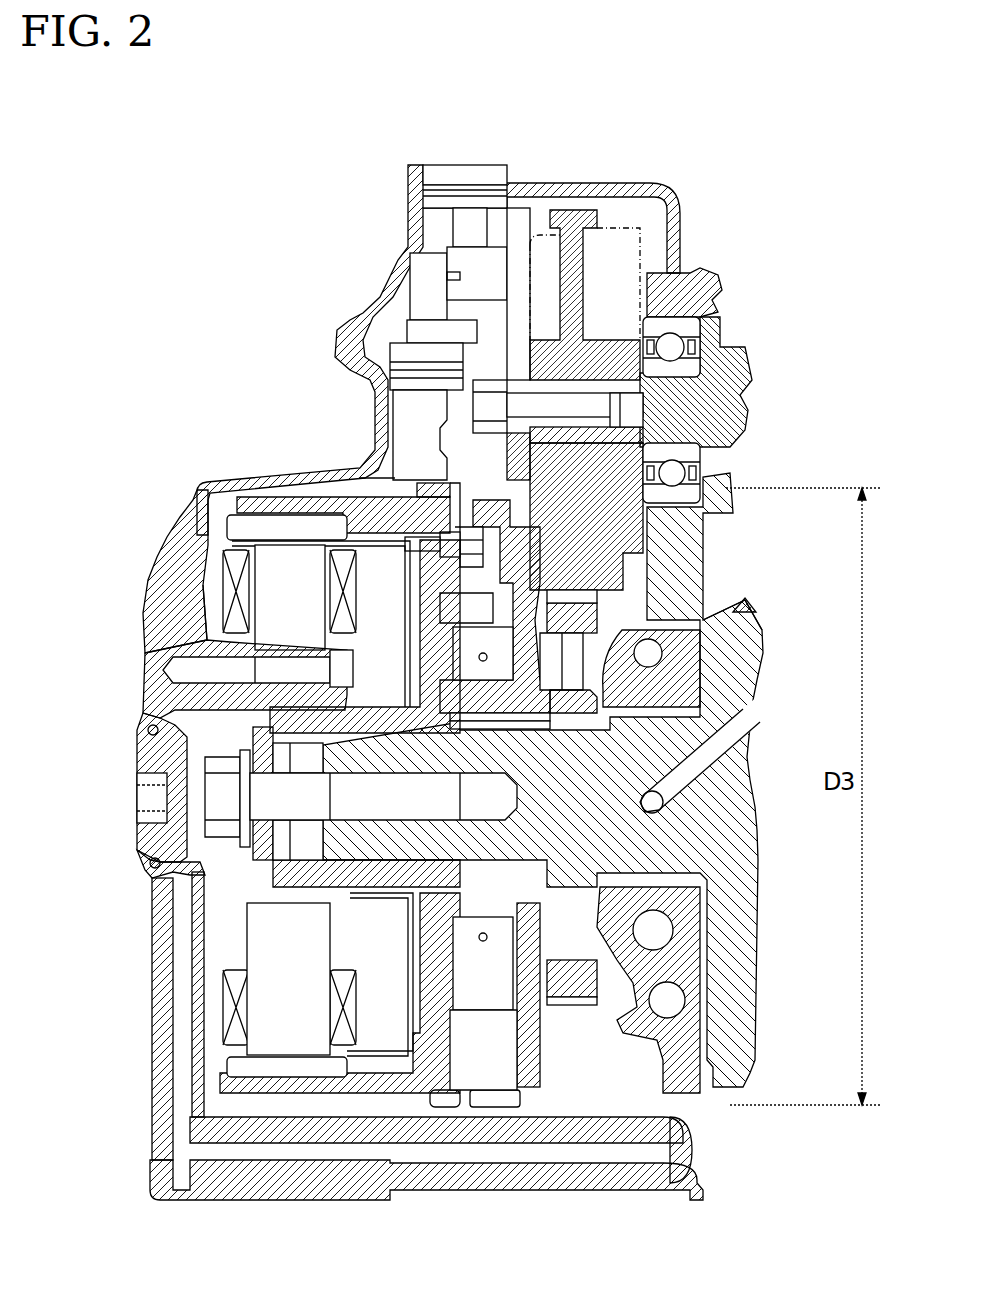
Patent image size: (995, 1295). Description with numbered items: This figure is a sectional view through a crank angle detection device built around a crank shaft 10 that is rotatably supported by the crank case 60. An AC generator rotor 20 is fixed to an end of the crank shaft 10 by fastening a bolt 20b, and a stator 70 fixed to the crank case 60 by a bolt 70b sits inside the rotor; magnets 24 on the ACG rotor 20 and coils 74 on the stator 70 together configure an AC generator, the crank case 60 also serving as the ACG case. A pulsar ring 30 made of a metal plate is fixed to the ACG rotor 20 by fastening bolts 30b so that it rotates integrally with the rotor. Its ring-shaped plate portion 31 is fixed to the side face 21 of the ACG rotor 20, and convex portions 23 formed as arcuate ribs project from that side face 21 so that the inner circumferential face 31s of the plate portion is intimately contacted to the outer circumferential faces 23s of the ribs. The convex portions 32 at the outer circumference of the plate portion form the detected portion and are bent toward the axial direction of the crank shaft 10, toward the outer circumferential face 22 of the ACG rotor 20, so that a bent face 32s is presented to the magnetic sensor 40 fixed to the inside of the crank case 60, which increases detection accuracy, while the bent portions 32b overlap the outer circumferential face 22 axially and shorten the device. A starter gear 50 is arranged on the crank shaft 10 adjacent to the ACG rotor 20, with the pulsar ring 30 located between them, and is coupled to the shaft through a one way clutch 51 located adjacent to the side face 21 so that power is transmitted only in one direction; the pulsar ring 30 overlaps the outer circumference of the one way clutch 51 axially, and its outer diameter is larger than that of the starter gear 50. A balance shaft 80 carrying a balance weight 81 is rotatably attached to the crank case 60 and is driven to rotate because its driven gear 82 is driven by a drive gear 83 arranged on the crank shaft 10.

The crank shaft 10 is at (727, 813).
The AC generator rotor 20 is at (238, 497).
The bolt 20b is at (190, 800).
The side face 21 is at (383, 497).
The outer circumferential face 22 is at (377, 1092).
The convex portions 23 is at (700, 672).
The outer circumferential faces 23s is at (737, 606).
The magnets 24 is at (218, 527).
The pulsar ring 30 is at (480, 1092).
The bolts 30b is at (590, 590).
The ring-shaped plate portion 31 is at (620, 550).
The inner circumferential face 31s is at (798, 615).
The convex portions 32 is at (363, 480).
The bent face 32s is at (393, 480).
The bent portions 32b is at (436, 1104).
The magnetic sensor 40 is at (372, 420).
The starter gear 50 is at (655, 515).
The one way clutch 51 is at (470, 938).
The crank case 60 is at (660, 188).
The stator 70 is at (199, 573).
The bolt 70b is at (197, 670).
The coils 74 is at (200, 606).
The balance shaft 80 is at (700, 403).
The balance weight 81 is at (700, 453).
The driven gear 82 is at (548, 215).
The drive gear 83 is at (705, 702).